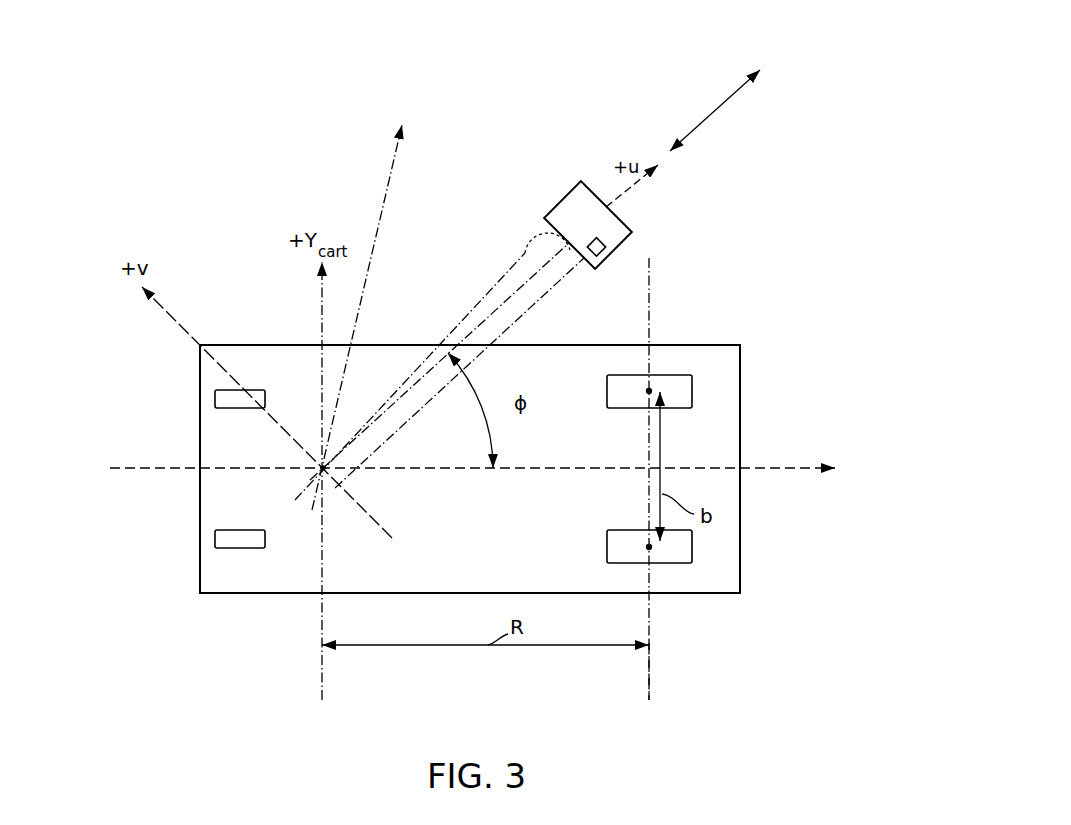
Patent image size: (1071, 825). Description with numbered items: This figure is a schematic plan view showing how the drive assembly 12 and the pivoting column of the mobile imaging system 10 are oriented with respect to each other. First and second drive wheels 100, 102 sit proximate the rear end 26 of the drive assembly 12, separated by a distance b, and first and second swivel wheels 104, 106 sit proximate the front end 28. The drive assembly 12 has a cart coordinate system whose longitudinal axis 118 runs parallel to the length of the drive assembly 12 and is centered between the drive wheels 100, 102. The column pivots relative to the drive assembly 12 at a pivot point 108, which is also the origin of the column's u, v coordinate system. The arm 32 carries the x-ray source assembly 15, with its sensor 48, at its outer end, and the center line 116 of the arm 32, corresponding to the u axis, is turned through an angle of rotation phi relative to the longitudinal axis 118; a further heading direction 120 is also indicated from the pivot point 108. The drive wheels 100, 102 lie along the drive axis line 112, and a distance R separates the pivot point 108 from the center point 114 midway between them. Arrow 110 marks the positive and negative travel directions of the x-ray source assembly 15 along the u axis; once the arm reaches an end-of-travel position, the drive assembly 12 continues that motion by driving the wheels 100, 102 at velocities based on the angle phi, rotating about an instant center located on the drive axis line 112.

The measurement system 10 is at (803, 55).
The drive assembly 12 is at (197, 432).
The x-ray source assembly 15 is at (570, 223).
The rear end 26 is at (822, 437).
The front end 28 is at (100, 468).
The arm 32 is at (525, 255).
The sensor 48 is at (603, 256).
The first drive wheel 100 is at (692, 388).
The second drive wheel 102 is at (692, 545).
The first swivel wheel 104 is at (215, 399).
The second swivel wheel 106 is at (215, 539).
The pivot point 108 is at (323, 472).
The arrow 110 is at (718, 108).
The drive axis line 112 is at (655, 668).
The center point 114 is at (648, 468).
The center line 116 is at (495, 308).
The longitudinal axis 118 is at (780, 470).
The heading direction 120 is at (385, 195).